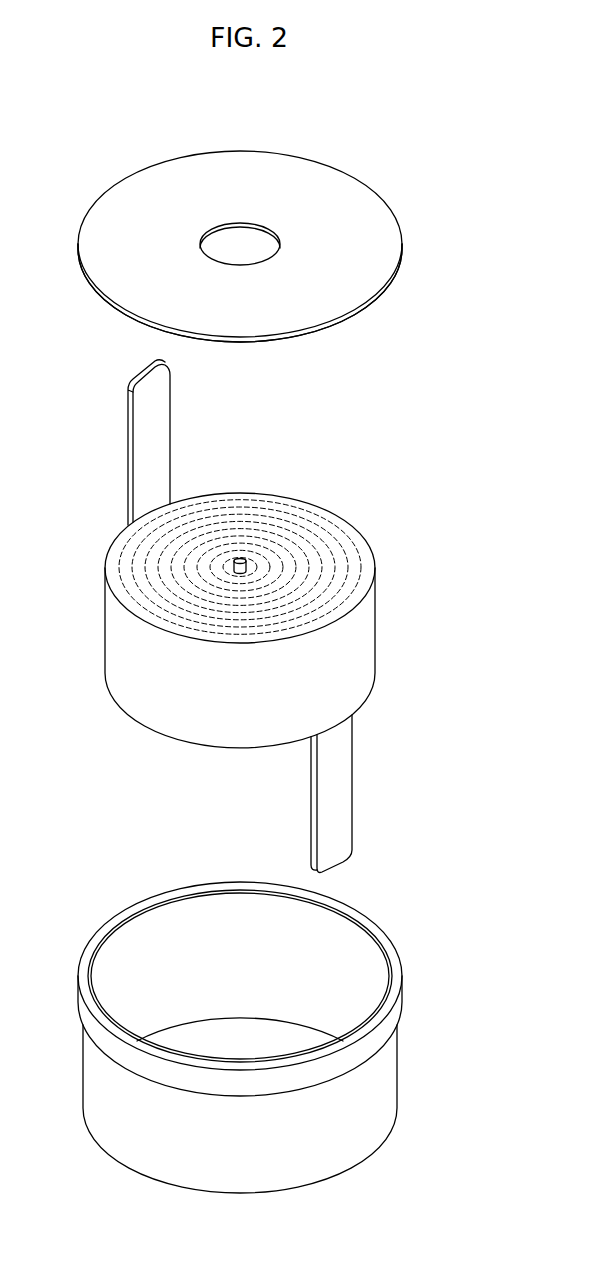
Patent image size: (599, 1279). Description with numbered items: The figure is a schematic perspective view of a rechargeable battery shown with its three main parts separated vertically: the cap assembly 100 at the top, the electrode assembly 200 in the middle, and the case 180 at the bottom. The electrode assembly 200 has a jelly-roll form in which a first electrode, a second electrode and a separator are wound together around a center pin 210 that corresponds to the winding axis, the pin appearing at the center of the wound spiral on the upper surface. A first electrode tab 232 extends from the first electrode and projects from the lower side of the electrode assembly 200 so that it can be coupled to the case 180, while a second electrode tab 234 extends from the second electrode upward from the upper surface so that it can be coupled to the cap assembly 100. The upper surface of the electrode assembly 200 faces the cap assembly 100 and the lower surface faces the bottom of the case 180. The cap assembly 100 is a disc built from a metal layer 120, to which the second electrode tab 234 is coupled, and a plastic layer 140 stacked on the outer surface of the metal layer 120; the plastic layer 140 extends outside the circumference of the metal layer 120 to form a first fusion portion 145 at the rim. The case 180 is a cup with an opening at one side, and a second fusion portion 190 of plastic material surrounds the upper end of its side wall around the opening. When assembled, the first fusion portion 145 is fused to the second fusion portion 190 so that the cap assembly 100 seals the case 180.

The cap assembly 100 is at (390, 188).
The metal layer 120 is at (239, 240).
The plastic layer 140 is at (330, 180).
The first fusion portion 145 is at (402, 237).
The electrode assembly 200 is at (365, 642).
The center pin 210 is at (240, 558).
The first electrode tab 232 is at (343, 792).
The second electrode tab 234 is at (143, 432).
The case 180 is at (390, 1068).
The second fusion portion 190 is at (393, 955).